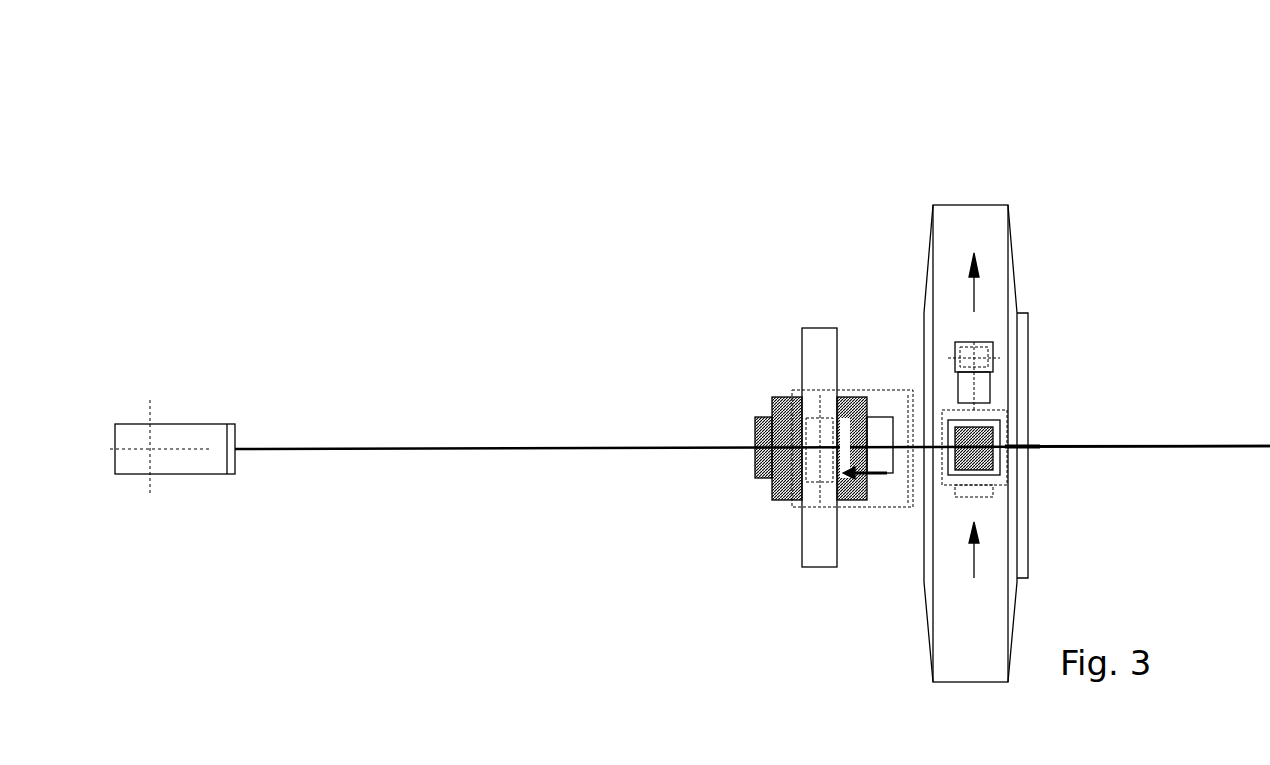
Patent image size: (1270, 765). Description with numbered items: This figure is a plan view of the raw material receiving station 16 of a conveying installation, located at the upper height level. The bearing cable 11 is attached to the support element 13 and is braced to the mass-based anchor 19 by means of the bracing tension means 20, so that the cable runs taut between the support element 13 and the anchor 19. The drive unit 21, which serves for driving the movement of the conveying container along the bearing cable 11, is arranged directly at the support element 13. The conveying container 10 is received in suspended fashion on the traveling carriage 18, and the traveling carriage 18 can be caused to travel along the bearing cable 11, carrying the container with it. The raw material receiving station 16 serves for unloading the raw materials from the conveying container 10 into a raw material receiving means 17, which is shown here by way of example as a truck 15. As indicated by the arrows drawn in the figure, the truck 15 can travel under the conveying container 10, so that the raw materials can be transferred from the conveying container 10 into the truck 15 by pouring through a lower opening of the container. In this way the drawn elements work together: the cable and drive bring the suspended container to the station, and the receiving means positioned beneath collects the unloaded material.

The conveying container 10 is at (990, 430).
The bearing cable 11 is at (1190, 448).
The support element 13 is at (790, 382).
The truck 15 is at (985, 385).
The raw material receiving station 16 is at (1108, 177).
The raw material receiving means 17 is at (1003, 352).
The traveling carriage 18 is at (1030, 450).
The mass-based anchor 19 is at (182, 468).
The bracing tension means 20 is at (538, 450).
The drive unit 21 is at (883, 463).